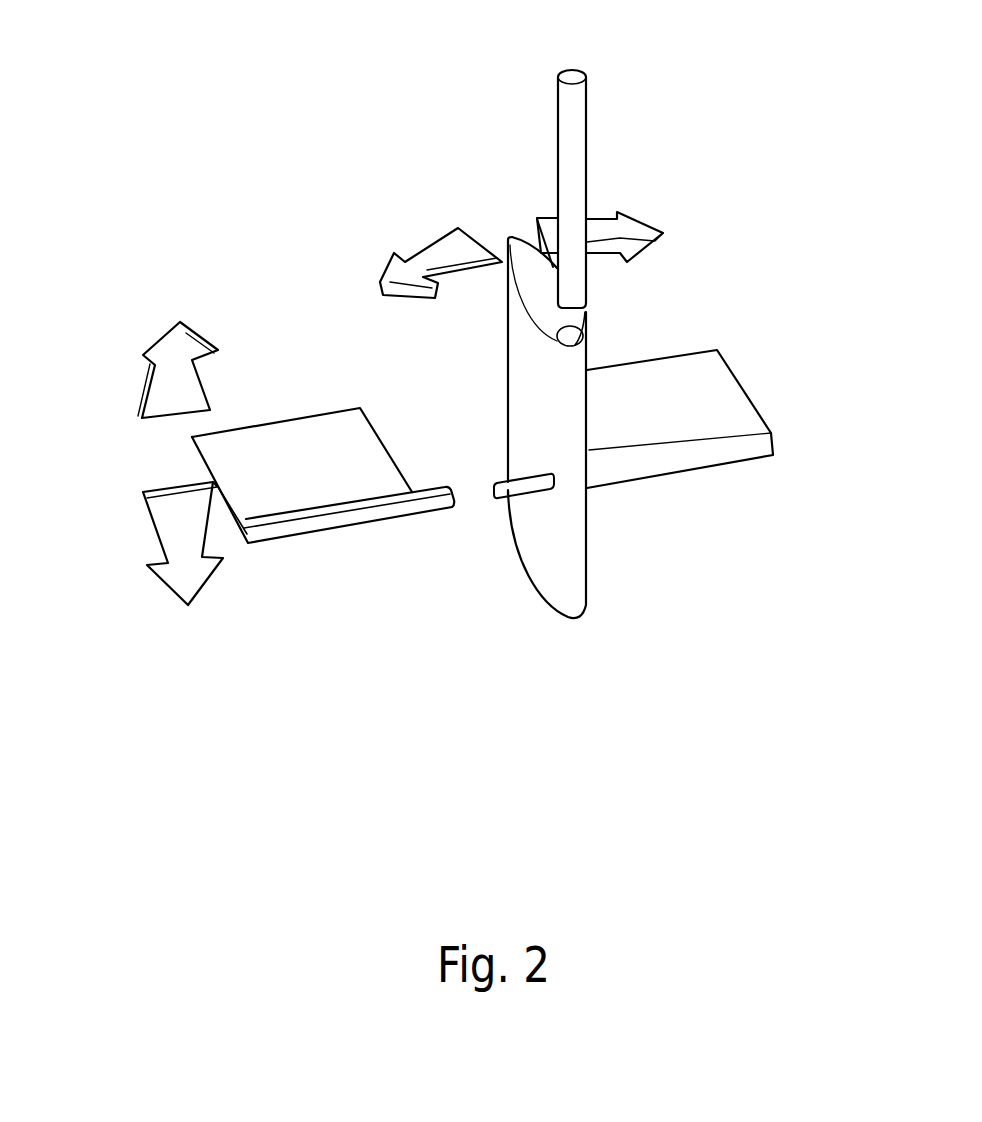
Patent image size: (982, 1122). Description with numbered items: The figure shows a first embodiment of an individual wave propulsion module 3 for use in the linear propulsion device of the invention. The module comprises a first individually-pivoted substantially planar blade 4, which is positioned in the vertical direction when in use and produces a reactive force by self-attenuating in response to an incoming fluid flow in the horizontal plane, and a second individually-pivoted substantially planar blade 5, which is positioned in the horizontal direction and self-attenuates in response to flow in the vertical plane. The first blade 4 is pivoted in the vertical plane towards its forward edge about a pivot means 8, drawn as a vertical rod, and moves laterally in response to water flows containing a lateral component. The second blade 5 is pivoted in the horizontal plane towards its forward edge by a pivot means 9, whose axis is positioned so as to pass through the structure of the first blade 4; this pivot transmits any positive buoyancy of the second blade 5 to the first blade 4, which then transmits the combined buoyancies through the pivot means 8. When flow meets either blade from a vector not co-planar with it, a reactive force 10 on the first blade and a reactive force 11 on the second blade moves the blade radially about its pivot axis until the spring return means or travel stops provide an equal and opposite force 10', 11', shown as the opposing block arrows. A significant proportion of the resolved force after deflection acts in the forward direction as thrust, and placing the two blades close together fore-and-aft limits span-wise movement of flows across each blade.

The wave propulsion module 3 is at (470, 108).
The first individually-pivoted substantially planar blade 4 is at (552, 533).
The second individually-pivoted substantially planar blade 5 is at (343, 480).
The pivot means 8 is at (570, 182).
The pivot means 9 is at (520, 485).
The reactive force 10 is at (724, 248).
The equal and opposite force 10' is at (375, 271).
The reactive force 11 is at (117, 372).
The equal and opposite force 11' is at (120, 543).